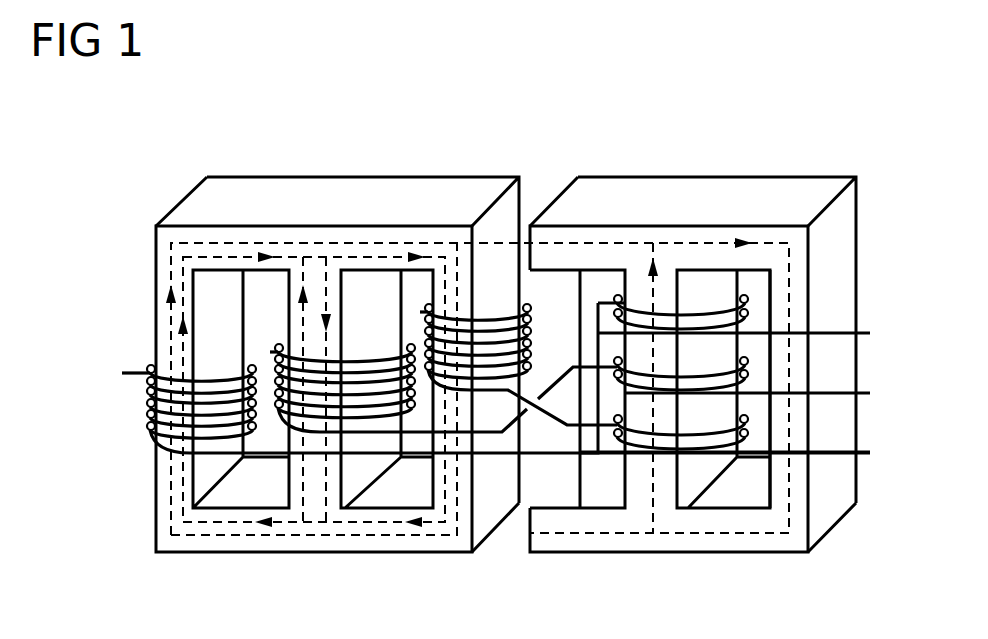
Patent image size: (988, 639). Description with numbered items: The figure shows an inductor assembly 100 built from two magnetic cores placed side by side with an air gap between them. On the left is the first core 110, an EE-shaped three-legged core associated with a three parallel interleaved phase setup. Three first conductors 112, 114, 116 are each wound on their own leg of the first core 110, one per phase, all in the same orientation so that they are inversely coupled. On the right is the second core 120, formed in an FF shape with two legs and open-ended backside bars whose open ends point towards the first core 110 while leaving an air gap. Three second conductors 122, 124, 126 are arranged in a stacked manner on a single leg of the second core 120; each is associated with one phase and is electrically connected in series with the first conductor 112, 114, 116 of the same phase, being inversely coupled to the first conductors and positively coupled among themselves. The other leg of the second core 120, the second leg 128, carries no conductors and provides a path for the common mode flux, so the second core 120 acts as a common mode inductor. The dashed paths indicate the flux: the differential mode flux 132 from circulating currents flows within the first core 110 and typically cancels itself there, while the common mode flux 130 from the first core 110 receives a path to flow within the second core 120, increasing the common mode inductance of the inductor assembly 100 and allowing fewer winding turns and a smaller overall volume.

The inductor assembly 100 is at (830, 142).
The first core 110 is at (327, 190).
The first conductor 112 is at (150, 414).
The first conductor 114 is at (372, 350).
The first conductor 116 is at (492, 305).
The second core 120 is at (845, 243).
The second conductor 122 is at (707, 300).
The second conductor 124 is at (745, 355).
The second conductor 126 is at (745, 415).
The second leg 128 is at (790, 283).
The common mode flux 130 is at (235, 243).
The differential mode flux 132 is at (224, 535).